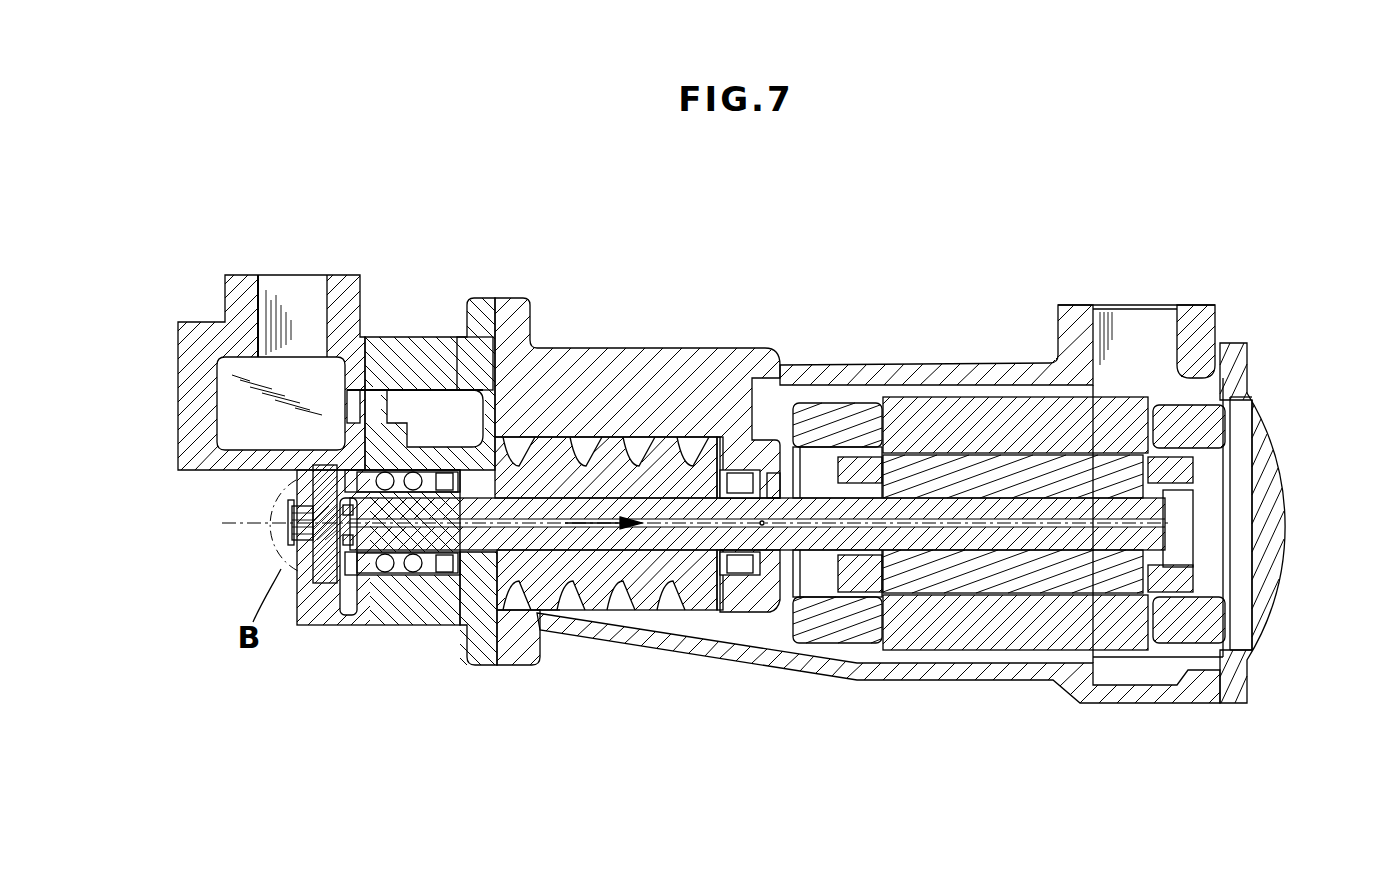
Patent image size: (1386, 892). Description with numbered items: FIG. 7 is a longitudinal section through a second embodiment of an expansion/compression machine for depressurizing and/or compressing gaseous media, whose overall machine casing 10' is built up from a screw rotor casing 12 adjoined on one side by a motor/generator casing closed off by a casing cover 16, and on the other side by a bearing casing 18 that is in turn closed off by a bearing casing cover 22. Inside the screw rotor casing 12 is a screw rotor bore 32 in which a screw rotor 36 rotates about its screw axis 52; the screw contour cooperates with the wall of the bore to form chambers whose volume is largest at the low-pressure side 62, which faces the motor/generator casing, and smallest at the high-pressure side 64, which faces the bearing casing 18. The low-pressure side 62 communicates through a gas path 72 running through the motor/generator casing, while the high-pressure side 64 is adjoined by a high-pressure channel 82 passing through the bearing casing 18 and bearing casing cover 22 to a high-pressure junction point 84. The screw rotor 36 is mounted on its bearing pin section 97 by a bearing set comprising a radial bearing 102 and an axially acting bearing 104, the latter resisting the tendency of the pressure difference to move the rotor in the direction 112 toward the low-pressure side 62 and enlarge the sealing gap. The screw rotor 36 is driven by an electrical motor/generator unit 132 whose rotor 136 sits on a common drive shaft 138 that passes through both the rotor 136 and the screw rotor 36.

The machine casing 10' is at (864, 243).
The screw rotor casing 12 is at (588, 358).
The casing cover 16 is at (1262, 436).
The bearing casing 18 is at (425, 615).
The bearing casing cover 22 is at (192, 436).
The screw rotor bore 32 is at (637, 433).
The screw rotor 36 is at (652, 590).
The screw axis 52 is at (229, 527).
The low-pressure side 62 is at (696, 622).
The high-pressure side 64 is at (465, 390).
The gas path 72 is at (777, 618).
The high-pressure channel 82 is at (397, 410).
The high-pressure junction point 84 is at (260, 302).
The bearing pin section 97 is at (413, 578).
The radial bearing 102 is at (450, 590).
The axially acting bearing 104 is at (385, 590).
The direction 112 is at (592, 612).
The electrical motor/generator unit 132 is at (1132, 377).
The rotor 136 is at (948, 432).
The drive shaft 138 is at (958, 540).